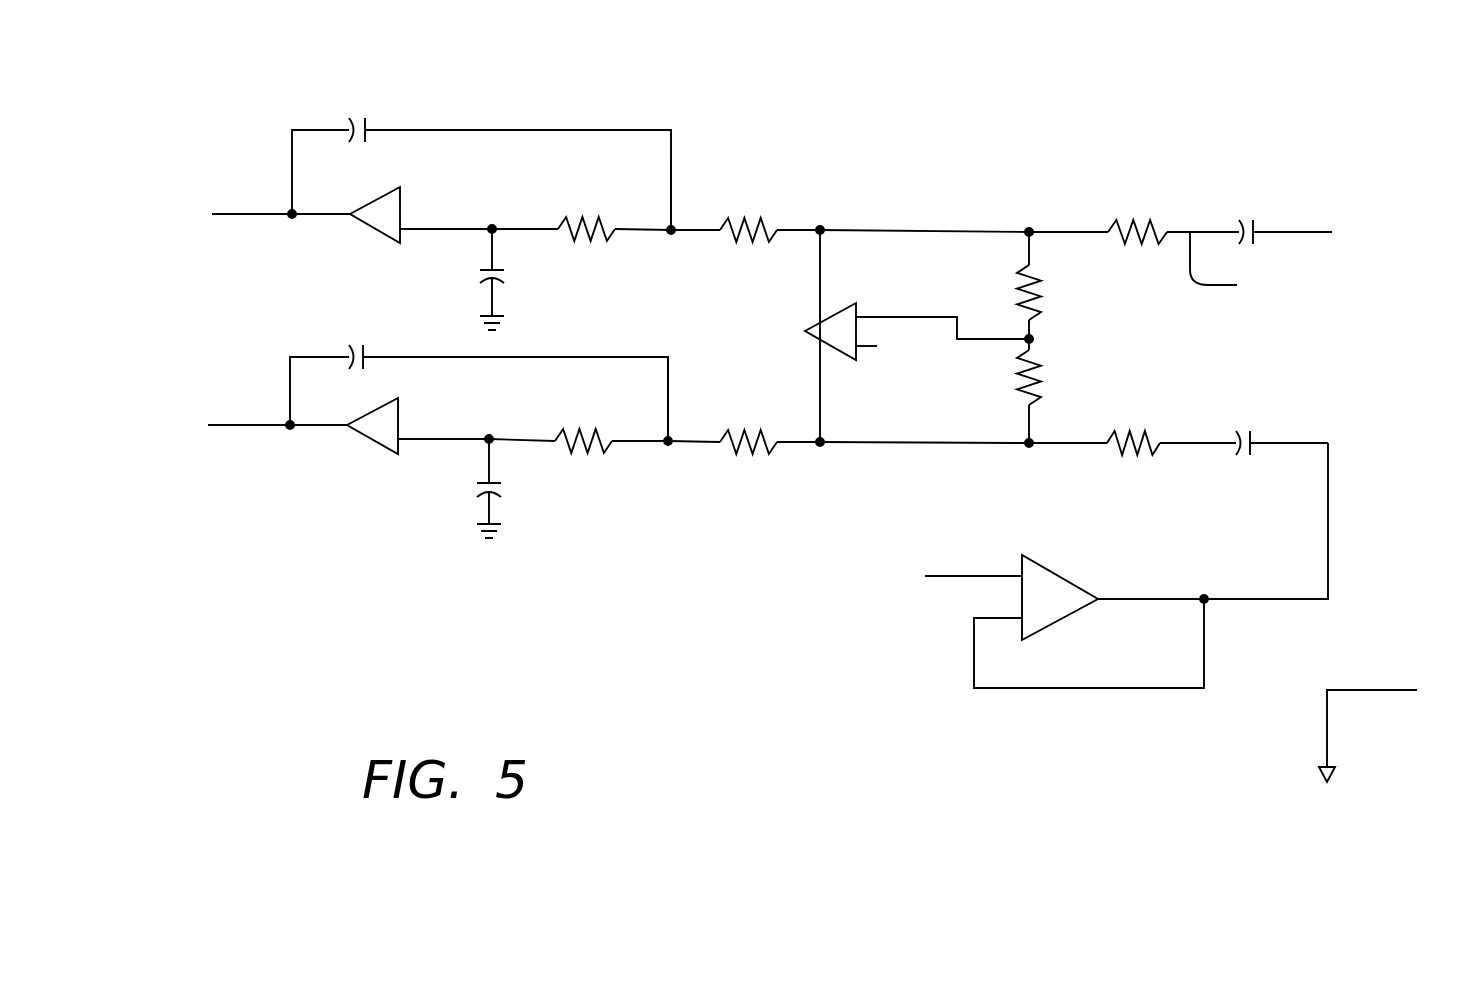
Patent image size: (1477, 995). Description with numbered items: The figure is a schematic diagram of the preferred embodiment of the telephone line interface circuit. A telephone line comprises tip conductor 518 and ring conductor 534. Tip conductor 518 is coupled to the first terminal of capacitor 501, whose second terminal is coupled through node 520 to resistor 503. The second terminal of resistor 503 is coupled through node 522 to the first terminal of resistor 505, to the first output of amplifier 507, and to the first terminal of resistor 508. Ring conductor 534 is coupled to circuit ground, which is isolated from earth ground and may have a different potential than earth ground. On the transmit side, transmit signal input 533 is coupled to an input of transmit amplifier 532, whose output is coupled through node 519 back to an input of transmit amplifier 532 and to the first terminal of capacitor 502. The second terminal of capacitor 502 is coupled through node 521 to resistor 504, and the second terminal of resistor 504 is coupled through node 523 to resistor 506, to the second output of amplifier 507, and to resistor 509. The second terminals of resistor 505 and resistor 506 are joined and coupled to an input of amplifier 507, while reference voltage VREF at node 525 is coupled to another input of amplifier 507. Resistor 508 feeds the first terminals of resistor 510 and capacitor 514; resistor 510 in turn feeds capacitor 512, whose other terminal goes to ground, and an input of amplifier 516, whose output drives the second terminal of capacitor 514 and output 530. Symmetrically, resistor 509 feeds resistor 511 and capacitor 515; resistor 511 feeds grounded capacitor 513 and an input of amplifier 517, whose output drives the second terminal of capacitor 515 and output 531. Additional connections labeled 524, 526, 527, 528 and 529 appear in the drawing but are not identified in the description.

The capacitor 501 is at (1259, 222).
The capacitor 502 is at (1262, 429).
The resistor 503 is at (1133, 224).
The resistor 504 is at (1119, 452).
The resistor 505 is at (1041, 292).
The resistor 506 is at (1041, 396).
The amplifier 507 is at (811, 331).
The resistor 508 is at (764, 226).
The resistor 509 is at (733, 450).
The resistor 510 is at (581, 218).
The resistor 511 is at (588, 450).
The capacitor 512 is at (503, 282).
The capacitor 513 is at (495, 493).
The capacitor 514 is at (368, 123).
The capacitor 515 is at (366, 352).
The amplifier 516 is at (372, 227).
The amplifier 517 is at (366, 437).
The tip conductor 518 is at (1318, 232).
The node 519 is at (1328, 521).
The node 520 is at (1240, 267).
The node 521 is at (1203, 448).
The node 522 is at (935, 230).
The node 523 is at (885, 443).
The reference output line 524 is at (958, 325).
The node 525 is at (868, 350).
The feedback line 526 is at (672, 158).
The feedback line 527 is at (600, 357).
The amplifier output line 528 is at (440, 229).
The amplifier output line 529 is at (428, 439).
The output 530 is at (243, 214).
The output 531 is at (245, 425).
The transmit amplifier 532 is at (1080, 587).
The transmit signal input 533 is at (985, 574).
The ring conductor 534 is at (1362, 690).